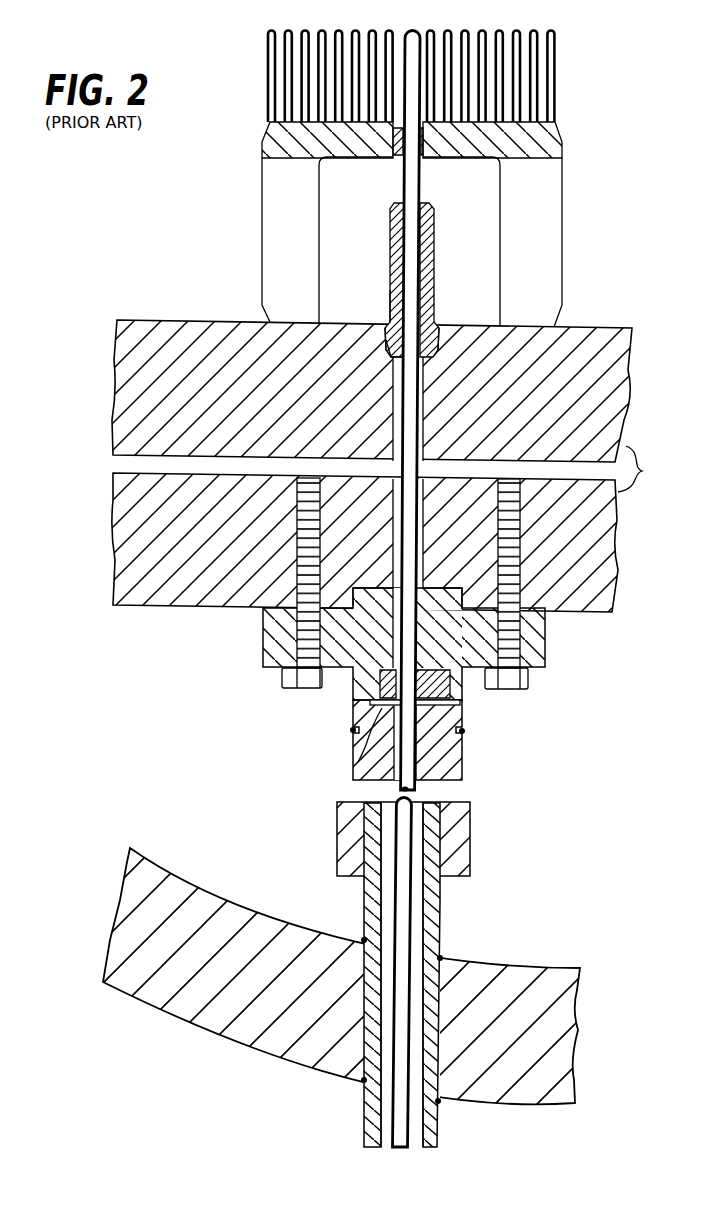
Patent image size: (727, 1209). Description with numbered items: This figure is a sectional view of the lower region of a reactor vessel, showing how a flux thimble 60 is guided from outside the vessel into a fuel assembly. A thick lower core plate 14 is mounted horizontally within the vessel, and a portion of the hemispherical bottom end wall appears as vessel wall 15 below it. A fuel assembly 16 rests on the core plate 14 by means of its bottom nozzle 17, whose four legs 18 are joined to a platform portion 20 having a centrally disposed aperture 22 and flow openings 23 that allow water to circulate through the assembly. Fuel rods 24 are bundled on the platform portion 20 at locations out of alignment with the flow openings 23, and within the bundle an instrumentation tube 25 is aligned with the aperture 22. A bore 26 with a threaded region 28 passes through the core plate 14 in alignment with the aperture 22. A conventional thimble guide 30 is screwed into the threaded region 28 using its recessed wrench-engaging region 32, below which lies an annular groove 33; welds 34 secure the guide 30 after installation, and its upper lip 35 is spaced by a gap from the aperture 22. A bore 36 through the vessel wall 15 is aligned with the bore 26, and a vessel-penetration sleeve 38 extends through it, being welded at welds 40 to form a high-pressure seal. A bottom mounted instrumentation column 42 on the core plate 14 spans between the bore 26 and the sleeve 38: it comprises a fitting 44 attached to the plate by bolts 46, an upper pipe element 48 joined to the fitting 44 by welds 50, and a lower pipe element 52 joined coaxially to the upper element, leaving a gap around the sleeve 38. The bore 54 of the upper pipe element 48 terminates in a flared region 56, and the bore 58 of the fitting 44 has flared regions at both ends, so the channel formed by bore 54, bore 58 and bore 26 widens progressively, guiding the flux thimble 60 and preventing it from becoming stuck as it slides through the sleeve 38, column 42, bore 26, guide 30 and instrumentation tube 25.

The lower core plate 14 is at (391, 529).
The vessel wall 15 is at (567, 1053).
The fuel assembly 16 is at (630, 116).
The bottom nozzle 17 is at (601, 163).
The legs 18 is at (262, 257).
The platform portion 20 is at (262, 144).
The aperture 22 is at (422, 157).
The flow openings 23 is at (391, 155).
The fuel rods 24 is at (352, 29).
The instrumentation tube 25 is at (451, 409).
The bore 26 is at (427, 416).
The threaded region 28 is at (388, 340).
The thimble guide 30 is at (402, 274).
The recessed wrench-engaging region 32 is at (392, 302).
The annular groove 33 is at (436, 312).
The welds 34 is at (384, 320).
The upper lip 35 is at (433, 205).
The bore 36 is at (438, 1030).
The vessel-penetration sleeve 38 is at (406, 975).
The welds 40 is at (364, 938).
The bottom mounted instrumentation column 42 is at (620, 730).
The fitting 44 is at (548, 638).
The bolts 46 is at (300, 680).
The upper pipe element 48 is at (409, 741).
The welds 50 is at (351, 729).
The lower pipe element 52 is at (466, 856).
The bore 54 is at (412, 789).
The flared region 56 is at (362, 746).
The bore 58 is at (450, 694).
The flux thimble 60 is at (405, 174).